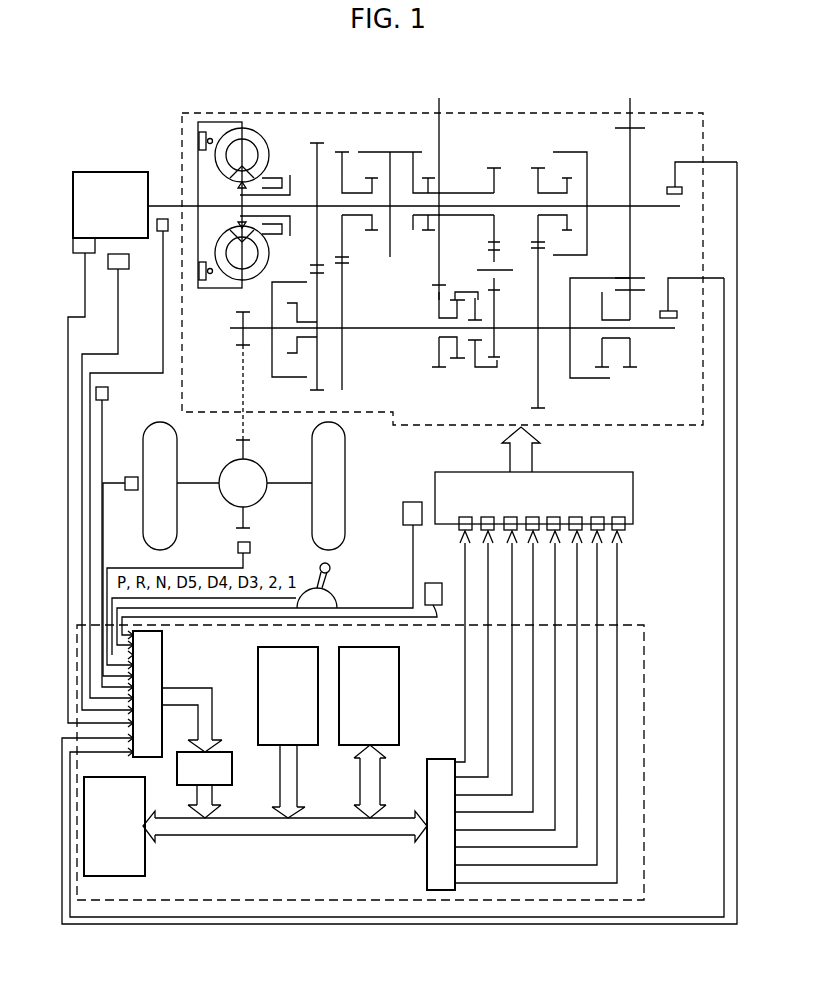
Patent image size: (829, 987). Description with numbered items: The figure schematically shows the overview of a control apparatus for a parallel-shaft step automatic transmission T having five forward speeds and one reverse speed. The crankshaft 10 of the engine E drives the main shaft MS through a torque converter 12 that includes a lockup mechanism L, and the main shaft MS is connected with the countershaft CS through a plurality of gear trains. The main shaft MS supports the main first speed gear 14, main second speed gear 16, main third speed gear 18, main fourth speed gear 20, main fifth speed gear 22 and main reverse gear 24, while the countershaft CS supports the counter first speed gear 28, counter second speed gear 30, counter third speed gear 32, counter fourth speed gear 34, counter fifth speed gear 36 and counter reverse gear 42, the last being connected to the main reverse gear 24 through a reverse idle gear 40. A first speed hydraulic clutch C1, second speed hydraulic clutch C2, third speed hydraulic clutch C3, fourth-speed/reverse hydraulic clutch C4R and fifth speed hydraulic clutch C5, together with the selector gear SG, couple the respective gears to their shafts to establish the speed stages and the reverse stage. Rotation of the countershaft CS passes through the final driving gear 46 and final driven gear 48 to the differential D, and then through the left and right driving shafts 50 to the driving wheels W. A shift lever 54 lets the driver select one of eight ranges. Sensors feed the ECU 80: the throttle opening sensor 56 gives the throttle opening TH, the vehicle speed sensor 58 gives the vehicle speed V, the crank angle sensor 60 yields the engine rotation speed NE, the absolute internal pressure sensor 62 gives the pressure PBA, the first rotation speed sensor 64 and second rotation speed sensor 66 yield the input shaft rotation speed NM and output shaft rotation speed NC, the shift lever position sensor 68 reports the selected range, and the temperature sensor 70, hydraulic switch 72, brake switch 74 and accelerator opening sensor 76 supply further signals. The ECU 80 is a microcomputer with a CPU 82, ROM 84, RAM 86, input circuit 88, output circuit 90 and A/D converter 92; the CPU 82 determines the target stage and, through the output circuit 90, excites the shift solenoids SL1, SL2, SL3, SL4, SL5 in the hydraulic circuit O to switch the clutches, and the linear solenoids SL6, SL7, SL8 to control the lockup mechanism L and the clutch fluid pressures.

The crankshaft 10 is at (171, 206).
The torque converter 12 is at (261, 125).
The main first speed gear 14 is at (538, 168).
The main second speed gear 16 is at (342, 152).
The main third speed gear 18 is at (317, 143).
The main fourth speed gear 20 is at (462, 191).
The main fifth speed gear 22 is at (630, 201).
The main reverse gear 24 is at (494, 168).
The counter first speed gear 28 is at (545, 408).
The counter second speed gear 30 is at (342, 390).
The counter third speed gear 32 is at (317, 392).
The counter fourth speed gear 34 is at (442, 370).
The counter fifth speed gear 36 is at (634, 370).
The reverse idle gear 40 is at (486, 246).
The counter reverse gear 42 is at (496, 358).
The final driving gear 46 is at (238, 340).
The final driven gear 48 is at (241, 440).
The driving shafts 50 is at (203, 483).
The shift lever 54 is at (343, 571).
The throttle opening sensor 56 is at (125, 270).
The vehicle speed sensor 58 is at (250, 548).
The crank angle sensor 60 is at (160, 232).
The absolute internal pressure sensor 62 is at (90, 254).
The first rotation speed sensor 64 is at (672, 185).
The second rotation speed sensor 66 is at (664, 310).
The shift lever position sensor 68 is at (335, 600).
The temperature sensor 70 is at (403, 514).
The hydraulic switch 72 is at (283, 616).
The brake switch 74 is at (131, 490).
The accelerator opening sensor 76 is at (108, 393).
The ECU 80 is at (644, 706).
The CPU 82 is at (142, 792).
The ROM 84 is at (258, 672).
The RAM 86 is at (399, 672).
The input circuit 88 is at (162, 657).
The output circuit 90 is at (427, 873).
The A/D converter 92 is at (232, 775).
The engine E is at (104, 172).
The automatic transmission T is at (490, 113).
The lockup mechanism L is at (203, 131).
The first speed hydraulic clutch C1 is at (572, 152).
The second speed hydraulic clutch C2 is at (366, 152).
The third speed hydraulic clutch C3 is at (280, 377).
The fourth-speed/reverse hydraulic clutch C4R is at (412, 152).
The fifth speed hydraulic clutch C5 is at (600, 378).
The selector gear SG is at (480, 370).
The main shaft MS is at (655, 206).
The countershaft CS is at (665, 328).
The input shaft rotation speed NM is at (399, 533).
The output shaft rotation speed NC is at (397, 587).
The engine rotation speed NE is at (145, 365).
The throttle opening TH is at (102, 344).
The suction pipe absolute internal pressure PBA is at (61, 306).
The vehicle speed V is at (206, 554).
The driving wheels W is at (143, 455).
The differential D is at (262, 470).
The hydraulic circuit O is at (633, 498).
The shift solenoid SL1 is at (463, 517).
The shift solenoid SL2 is at (485, 517).
The shift solenoid SL3 is at (508, 531).
The shift solenoid SL4 is at (530, 531).
The shift solenoid SL5 is at (568, 531).
The linear solenoid SL6 is at (576, 517).
The linear solenoid SL7 is at (597, 517).
The linear solenoid SL8 is at (618, 517).